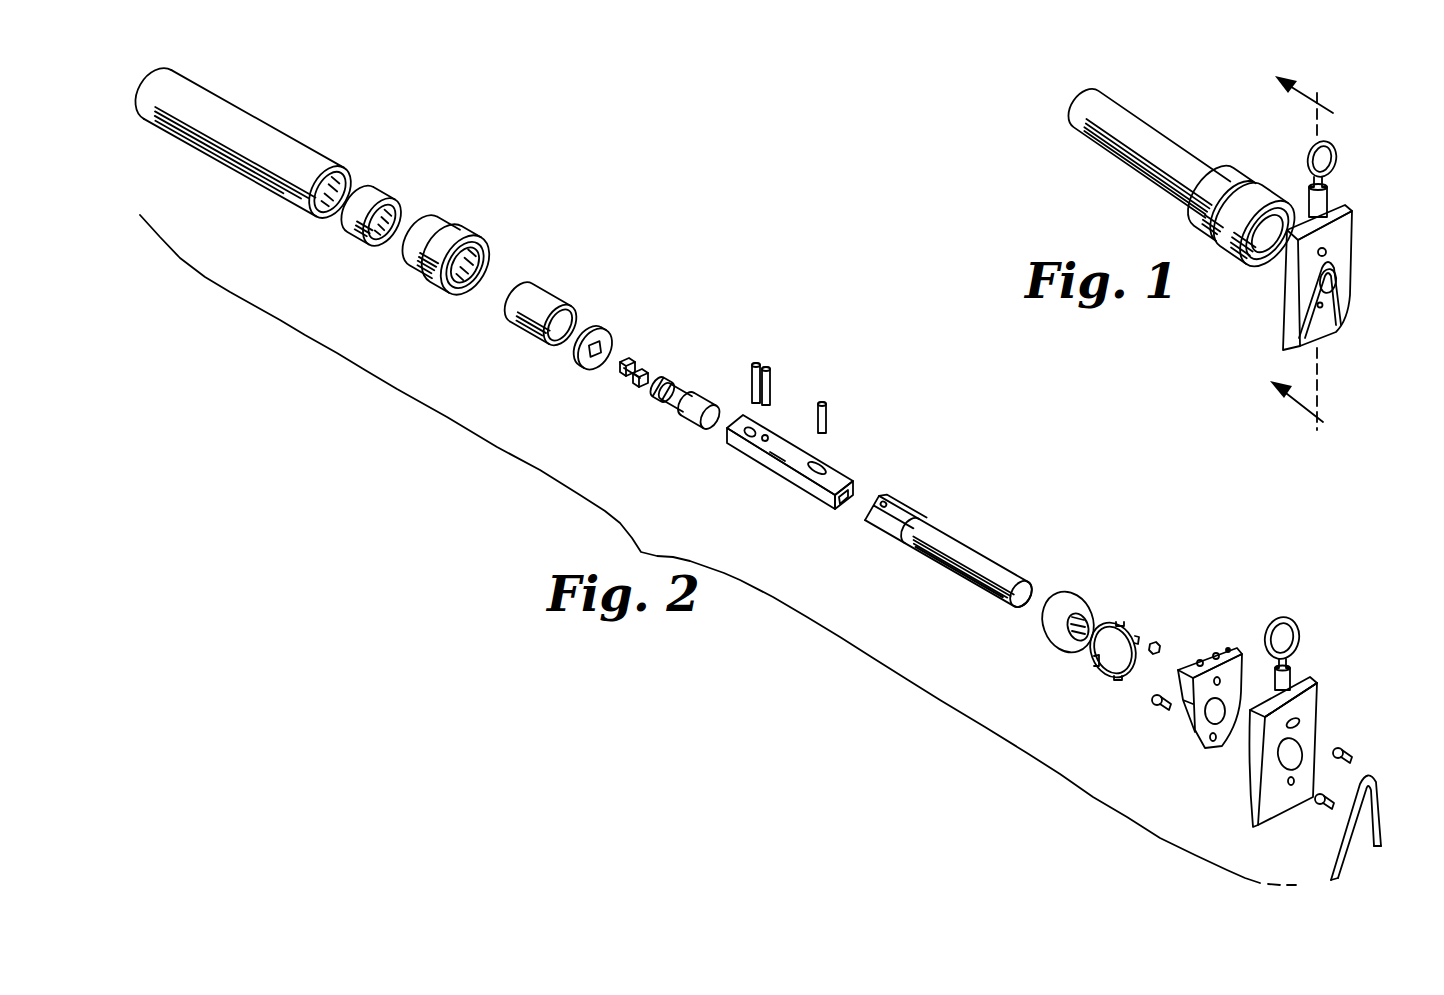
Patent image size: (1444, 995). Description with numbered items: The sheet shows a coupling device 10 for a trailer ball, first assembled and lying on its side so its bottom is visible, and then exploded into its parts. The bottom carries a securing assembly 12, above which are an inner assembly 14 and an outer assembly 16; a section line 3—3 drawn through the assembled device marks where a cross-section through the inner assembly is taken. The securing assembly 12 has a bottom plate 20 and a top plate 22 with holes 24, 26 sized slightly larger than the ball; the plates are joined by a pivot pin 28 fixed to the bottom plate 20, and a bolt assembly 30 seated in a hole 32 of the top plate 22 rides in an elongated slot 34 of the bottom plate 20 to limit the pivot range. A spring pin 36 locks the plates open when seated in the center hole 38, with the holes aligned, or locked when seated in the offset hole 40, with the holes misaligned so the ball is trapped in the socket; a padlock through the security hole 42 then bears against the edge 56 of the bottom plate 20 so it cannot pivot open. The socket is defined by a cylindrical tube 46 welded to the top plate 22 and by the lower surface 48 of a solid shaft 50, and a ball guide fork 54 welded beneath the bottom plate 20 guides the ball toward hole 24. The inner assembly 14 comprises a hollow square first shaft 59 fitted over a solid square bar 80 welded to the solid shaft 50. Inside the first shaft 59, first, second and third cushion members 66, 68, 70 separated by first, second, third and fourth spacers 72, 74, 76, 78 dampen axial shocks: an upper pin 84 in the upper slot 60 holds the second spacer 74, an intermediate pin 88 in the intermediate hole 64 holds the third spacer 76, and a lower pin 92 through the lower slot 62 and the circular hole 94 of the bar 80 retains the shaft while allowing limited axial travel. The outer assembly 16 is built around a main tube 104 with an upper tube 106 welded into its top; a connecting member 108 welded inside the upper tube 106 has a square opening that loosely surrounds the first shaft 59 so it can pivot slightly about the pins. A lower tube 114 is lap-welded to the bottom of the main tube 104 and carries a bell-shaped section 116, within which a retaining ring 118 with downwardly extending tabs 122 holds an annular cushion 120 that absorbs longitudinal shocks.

In FIG. 1, the section line 3- 3 is at (1311, 254).
In FIG. 2, the coupling device 10 is at (963, 427).
In FIG. 1, the coupling device 10 is at (1106, 190).
In FIG. 2, the securing assembly 12 is at (1296, 584).
In FIG. 1, the securing assembly 12 is at (1372, 273).
In FIG. 2, the inner assembly 14 is at (893, 390).
In FIG. 1, the inner assembly 14 is at (1264, 266).
In FIG. 2, the outer assembly 16 is at (369, 130).
In FIG. 1, the outer assembly 16 is at (1180, 210).
In FIG. 2, the bottom plate 20 is at (1312, 732).
In FIG. 1, the bottom plate 20 is at (1345, 229).
In FIG. 2, the top plate 22 is at (1197, 663).
In FIG. 2, the hole 24 is at (1302, 752).
In FIG. 2, the hole 26 is at (1219, 722).
In FIG. 2, the pivot pin 28 is at (1152, 703).
In FIG. 2, the bolt assembly 30 is at (1352, 762).
In FIG. 2, the hole 32 is at (1221, 678).
In FIG. 2, the elongated slot 34 is at (1300, 722).
In FIG. 2, the spring pin 36 is at (1298, 629).
In FIG. 1, the spring pin 36 is at (1338, 161).
In FIG. 2, the center hole 38 is at (1216, 652).
In FIG. 2, the offset hole 40 is at (1199, 660).
In FIG. 2, the security hole 42 is at (1228, 647).
In FIG. 2, the cylindrical tube 46 is at (1185, 706).
In FIG. 2, the lower surface 48 is at (1018, 607).
In FIG. 2, the solid shaft 50 is at (939, 551).
In FIG. 2, the ball guide fork 54 is at (1358, 850).
In FIG. 1, the ball guide fork 54 is at (1346, 312).
In FIG. 2, the edge 56 is at (1306, 690).
In FIG. 2, the first shaft 59 is at (782, 474).
In FIG. 2, the upper slot 60 is at (743, 438).
In FIG. 2, the lower slot 62 is at (823, 464).
In FIG. 2, the intermediate hole 64 is at (768, 462).
In FIG. 2, the first cushion member 66 is at (634, 364).
In FIG. 2, the second cushion member 68 is at (680, 392).
In FIG. 2, the third cushion member 70 is at (707, 403).
In FIG. 2, the first spacer 72 is at (619, 370).
In FIG. 2, the second spacer 74 is at (640, 388).
In FIG. 2, the third spacer 76 is at (661, 398).
In FIG. 2, the fourth spacer 78 is at (674, 373).
In FIG. 2, the solid square bar 80 is at (889, 530).
In FIG. 2, the upper pin 84 is at (756, 362).
In FIG. 2, the intermediate pin 88 is at (767, 366).
In FIG. 2, the lower pin 92 is at (826, 404).
In FIG. 2, the circular hole 94 is at (881, 508).
In FIG. 2, the main tube 104 is at (262, 138).
In FIG. 1, the main tube 104 is at (1135, 126).
In FIG. 2, the upper tube 106 is at (535, 292).
In FIG. 2, the connecting member 108 is at (601, 326).
In FIG. 2, the lower tube 114 is at (372, 197).
In FIG. 2, the bell-shaped section 116 is at (470, 232).
In FIG. 2, the retaining ring 118 is at (1092, 631).
In FIG. 2, the annular cushion 120 is at (1048, 630).
In FIG. 2, the tabs 122 is at (1116, 624).